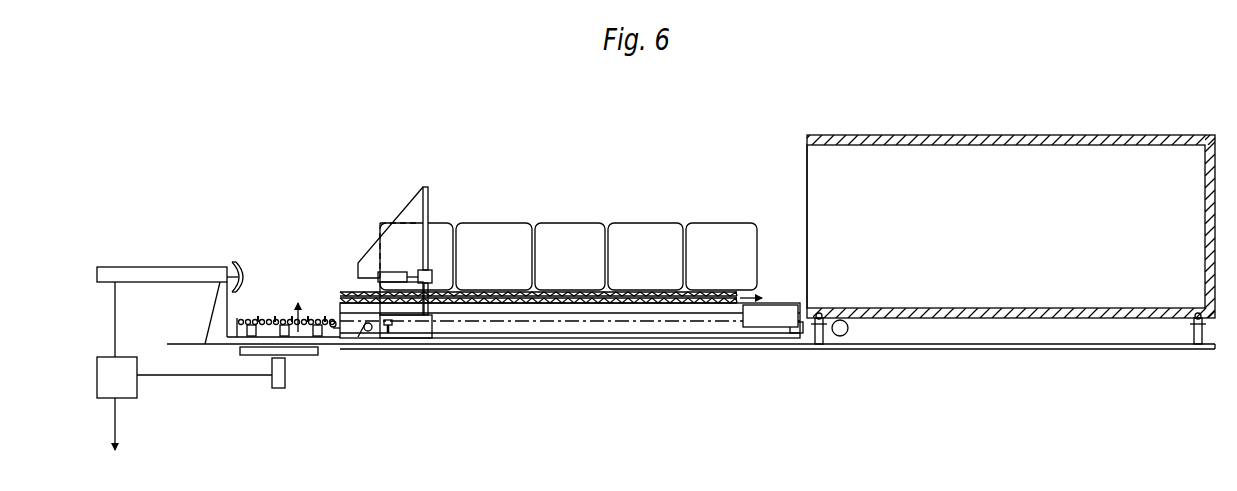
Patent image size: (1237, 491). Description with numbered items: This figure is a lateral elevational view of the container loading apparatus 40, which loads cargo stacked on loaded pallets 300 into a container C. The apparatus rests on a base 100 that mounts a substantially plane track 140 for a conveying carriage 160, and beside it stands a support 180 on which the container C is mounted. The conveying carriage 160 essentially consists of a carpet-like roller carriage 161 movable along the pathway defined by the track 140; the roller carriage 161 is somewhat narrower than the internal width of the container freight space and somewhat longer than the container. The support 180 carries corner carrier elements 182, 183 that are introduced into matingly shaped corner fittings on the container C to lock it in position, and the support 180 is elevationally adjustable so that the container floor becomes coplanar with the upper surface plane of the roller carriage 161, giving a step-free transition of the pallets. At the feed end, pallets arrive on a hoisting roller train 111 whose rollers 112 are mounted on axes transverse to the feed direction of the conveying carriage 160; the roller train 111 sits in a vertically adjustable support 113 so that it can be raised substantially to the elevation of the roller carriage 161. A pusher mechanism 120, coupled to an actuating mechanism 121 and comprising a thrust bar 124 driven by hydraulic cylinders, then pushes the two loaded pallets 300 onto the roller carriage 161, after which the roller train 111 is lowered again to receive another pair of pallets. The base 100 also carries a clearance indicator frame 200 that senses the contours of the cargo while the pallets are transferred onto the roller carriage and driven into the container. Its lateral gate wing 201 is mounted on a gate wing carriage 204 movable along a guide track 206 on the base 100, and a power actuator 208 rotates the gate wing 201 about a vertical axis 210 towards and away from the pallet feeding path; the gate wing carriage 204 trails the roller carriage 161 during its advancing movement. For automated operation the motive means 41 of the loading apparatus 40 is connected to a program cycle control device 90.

The container loading apparatus 40 is at (508, 220).
The motive means 41 is at (128, 385).
The program cycle control device 90 is at (113, 440).
The base 100 is at (702, 344).
The hoisting roller train 111 is at (308, 318).
The rollers 112 is at (263, 320).
The vertically adjustable support 113 is at (318, 337).
The pusher mechanism 120 is at (160, 267).
The actuating mechanism 121 is at (130, 280).
The thrust bar 124 is at (243, 265).
The track 140 is at (780, 312).
The conveying carriage 160 is at (570, 296).
The roller carriage 161 is at (617, 303).
The support 180 is at (988, 349).
The carrier element 182 is at (822, 349).
The carrier element 183 is at (1200, 349).
The clearance indicator frame 200 is at (418, 187).
The gate wing 201 is at (362, 265).
The gate wing carriage 204 is at (413, 338).
The guide track 206 is at (531, 333).
The power actuator 208 is at (389, 272).
The vertical axis 210 is at (430, 308).
The loaded pallets 300 is at (695, 230).
The container C is at (1000, 135).